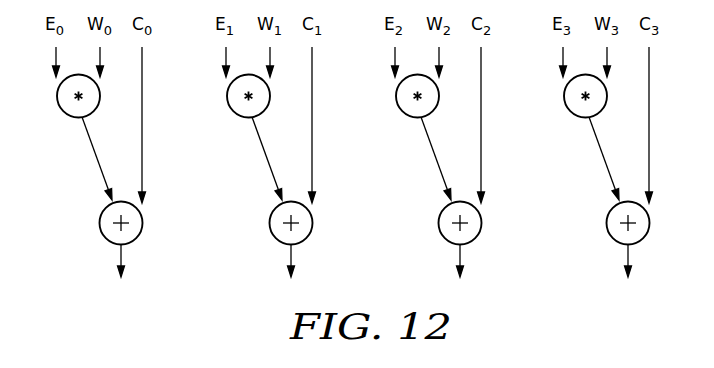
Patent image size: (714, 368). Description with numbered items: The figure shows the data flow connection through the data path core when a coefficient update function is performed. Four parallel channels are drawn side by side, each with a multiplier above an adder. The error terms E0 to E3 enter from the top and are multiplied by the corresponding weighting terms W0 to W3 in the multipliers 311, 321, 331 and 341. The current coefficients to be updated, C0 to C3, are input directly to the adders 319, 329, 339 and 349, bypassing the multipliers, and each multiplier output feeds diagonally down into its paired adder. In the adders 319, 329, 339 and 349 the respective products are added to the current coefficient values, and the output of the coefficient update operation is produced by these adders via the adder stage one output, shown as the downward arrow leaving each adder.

The multiplier 311 is at (61, 113).
The adder 319 is at (104, 240).
The multiplier 321 is at (228, 114).
The adder 329 is at (312, 242).
The multiplier 331 is at (397, 114).
The adder 339 is at (439, 242).
The multiplier 341 is at (565, 114).
The adder 349 is at (649, 242).